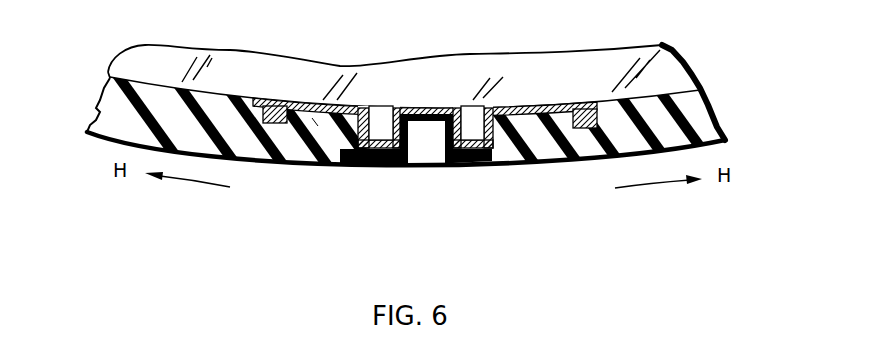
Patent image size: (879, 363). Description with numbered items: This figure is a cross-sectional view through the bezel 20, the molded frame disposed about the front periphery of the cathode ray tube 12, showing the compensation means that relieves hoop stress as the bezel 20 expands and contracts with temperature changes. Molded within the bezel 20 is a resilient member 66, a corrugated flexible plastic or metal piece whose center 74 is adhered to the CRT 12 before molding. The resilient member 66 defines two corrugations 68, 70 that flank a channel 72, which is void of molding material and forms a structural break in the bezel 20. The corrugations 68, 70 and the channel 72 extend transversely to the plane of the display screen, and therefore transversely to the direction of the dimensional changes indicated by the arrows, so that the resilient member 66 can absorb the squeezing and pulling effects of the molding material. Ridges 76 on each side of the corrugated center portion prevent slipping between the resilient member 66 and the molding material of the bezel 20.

The cathode ray tube 12 is at (615, 67).
The bezel 20 is at (700, 113).
The resilient member 66 is at (553, 107).
The corrugation 68 is at (380, 117).
The corrugation 70 is at (468, 123).
The channel 72 is at (432, 157).
The center 74 is at (427, 110).
The ridges 76 is at (315, 120).